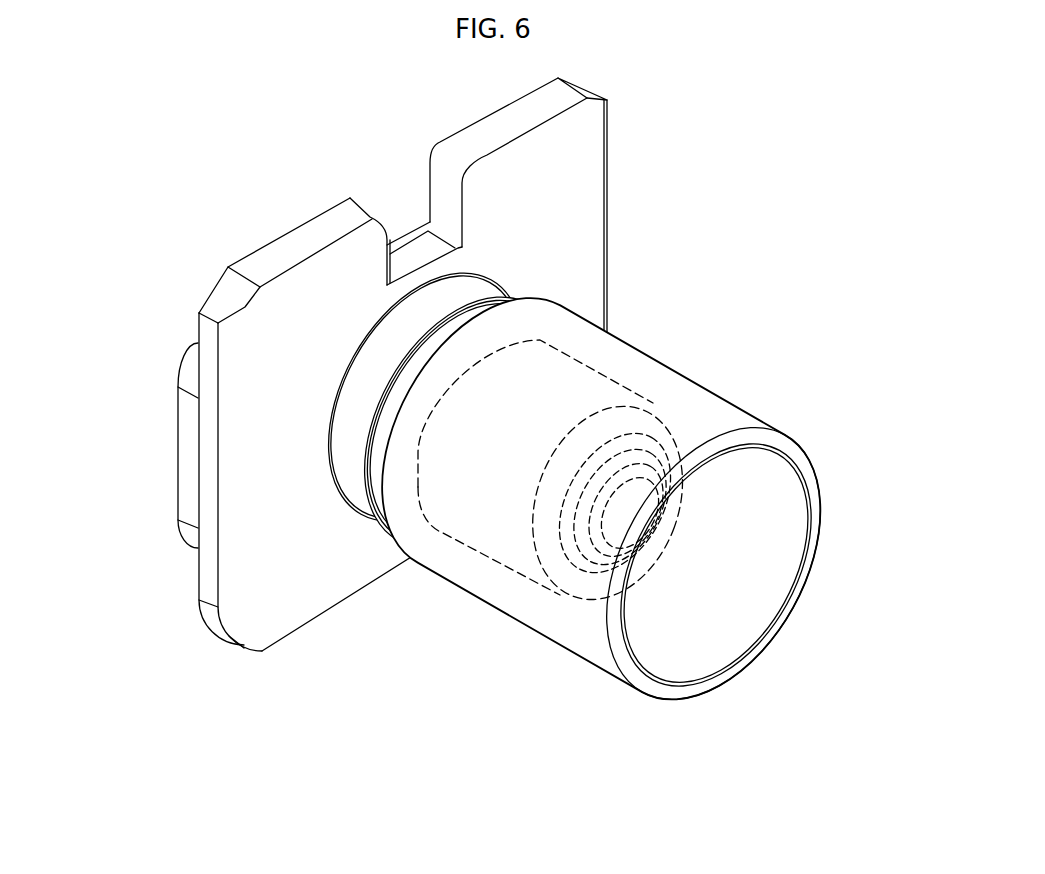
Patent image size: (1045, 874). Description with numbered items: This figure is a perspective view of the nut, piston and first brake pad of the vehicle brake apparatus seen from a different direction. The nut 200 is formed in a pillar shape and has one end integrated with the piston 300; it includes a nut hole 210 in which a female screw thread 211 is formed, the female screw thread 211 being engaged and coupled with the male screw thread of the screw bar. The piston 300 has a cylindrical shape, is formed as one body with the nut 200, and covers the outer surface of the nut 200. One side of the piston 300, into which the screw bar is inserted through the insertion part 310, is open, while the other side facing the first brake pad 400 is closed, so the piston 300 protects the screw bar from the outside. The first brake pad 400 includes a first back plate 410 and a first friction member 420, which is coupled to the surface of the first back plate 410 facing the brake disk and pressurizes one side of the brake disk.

The nut 200 is at (637, 395).
The nut hole 210 is at (655, 435).
The female screw thread 211 is at (617, 487).
The piston 300 is at (530, 613).
The insertion part 310 is at (763, 487).
The first brake pad 400 is at (335, 364).
The first back plate 410 is at (250, 545).
The first friction member 420 is at (192, 465).